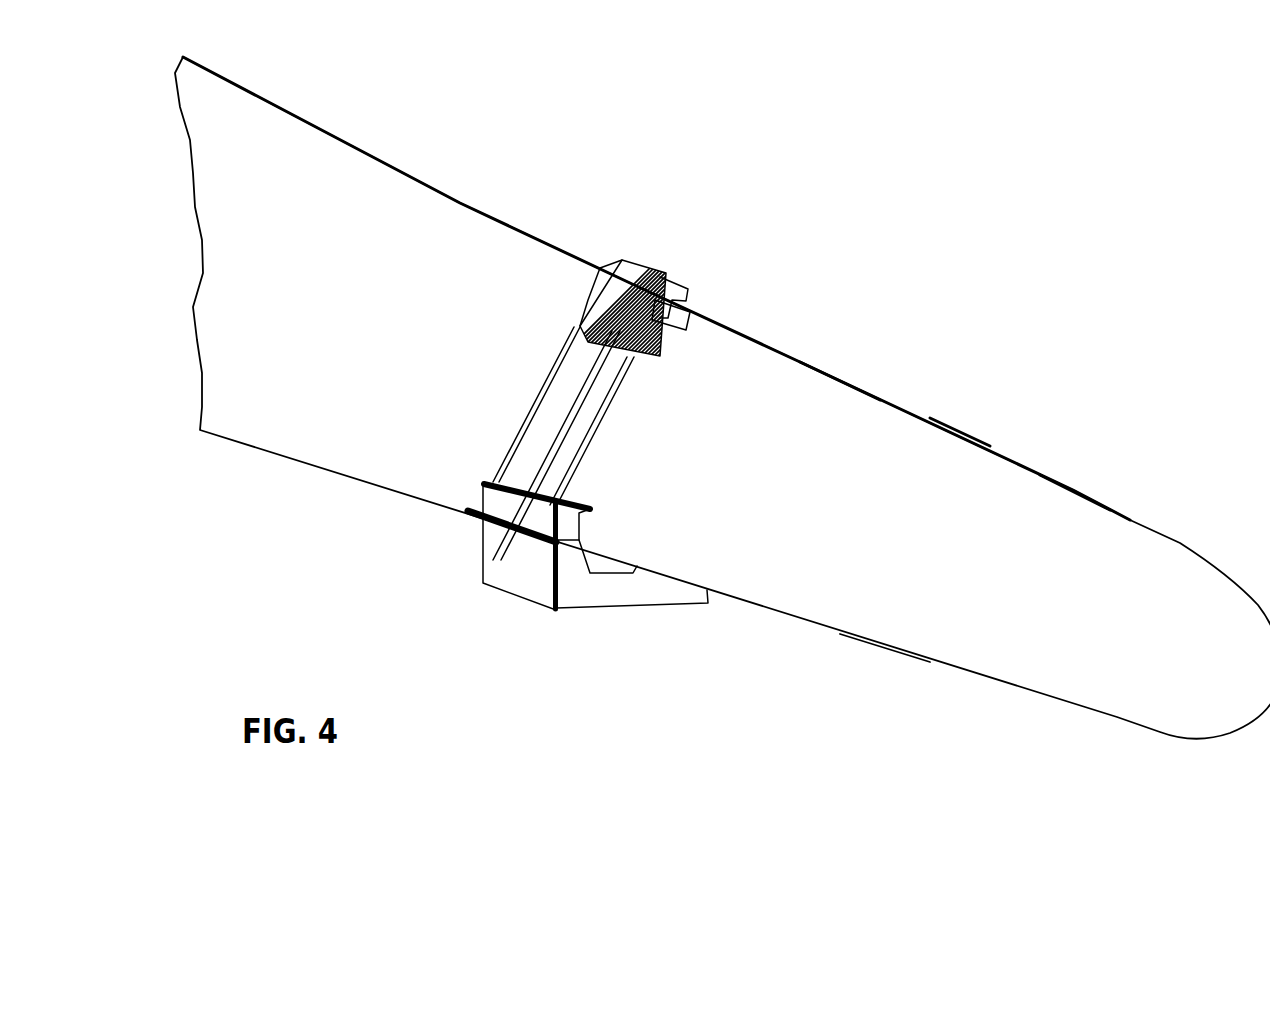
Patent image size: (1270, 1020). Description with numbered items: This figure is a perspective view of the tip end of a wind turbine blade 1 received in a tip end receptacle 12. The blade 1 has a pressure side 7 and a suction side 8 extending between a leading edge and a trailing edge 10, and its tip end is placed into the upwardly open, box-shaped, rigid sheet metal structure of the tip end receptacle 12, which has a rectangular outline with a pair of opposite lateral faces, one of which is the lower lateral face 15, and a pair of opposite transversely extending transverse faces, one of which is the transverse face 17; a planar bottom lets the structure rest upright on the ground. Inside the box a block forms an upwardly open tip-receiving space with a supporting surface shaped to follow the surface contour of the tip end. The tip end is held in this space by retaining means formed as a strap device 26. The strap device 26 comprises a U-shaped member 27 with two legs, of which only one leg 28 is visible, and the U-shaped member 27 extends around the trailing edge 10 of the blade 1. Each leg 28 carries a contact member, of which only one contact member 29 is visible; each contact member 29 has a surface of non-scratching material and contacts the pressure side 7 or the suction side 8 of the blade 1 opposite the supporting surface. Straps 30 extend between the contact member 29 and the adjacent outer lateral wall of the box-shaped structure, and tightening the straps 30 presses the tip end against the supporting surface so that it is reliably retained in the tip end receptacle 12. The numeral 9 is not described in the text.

The wind turbine blade 1 is at (925, 375).
The pressure side 7 is at (855, 410).
The suction side 8 is at (1074, 487).
The trailing edge 9 is at (883, 648).
The trailing edge 10 is at (960, 435).
The tip end receptacle 12 is at (611, 600).
The lateral face 15 is at (515, 580).
The transverse face 17 is at (573, 590).
The strap device 26 is at (672, 254).
The U-shaped member 27 is at (673, 277).
The leg 28 is at (603, 268).
The contact member 29 is at (656, 302).
The straps 30 is at (545, 376).